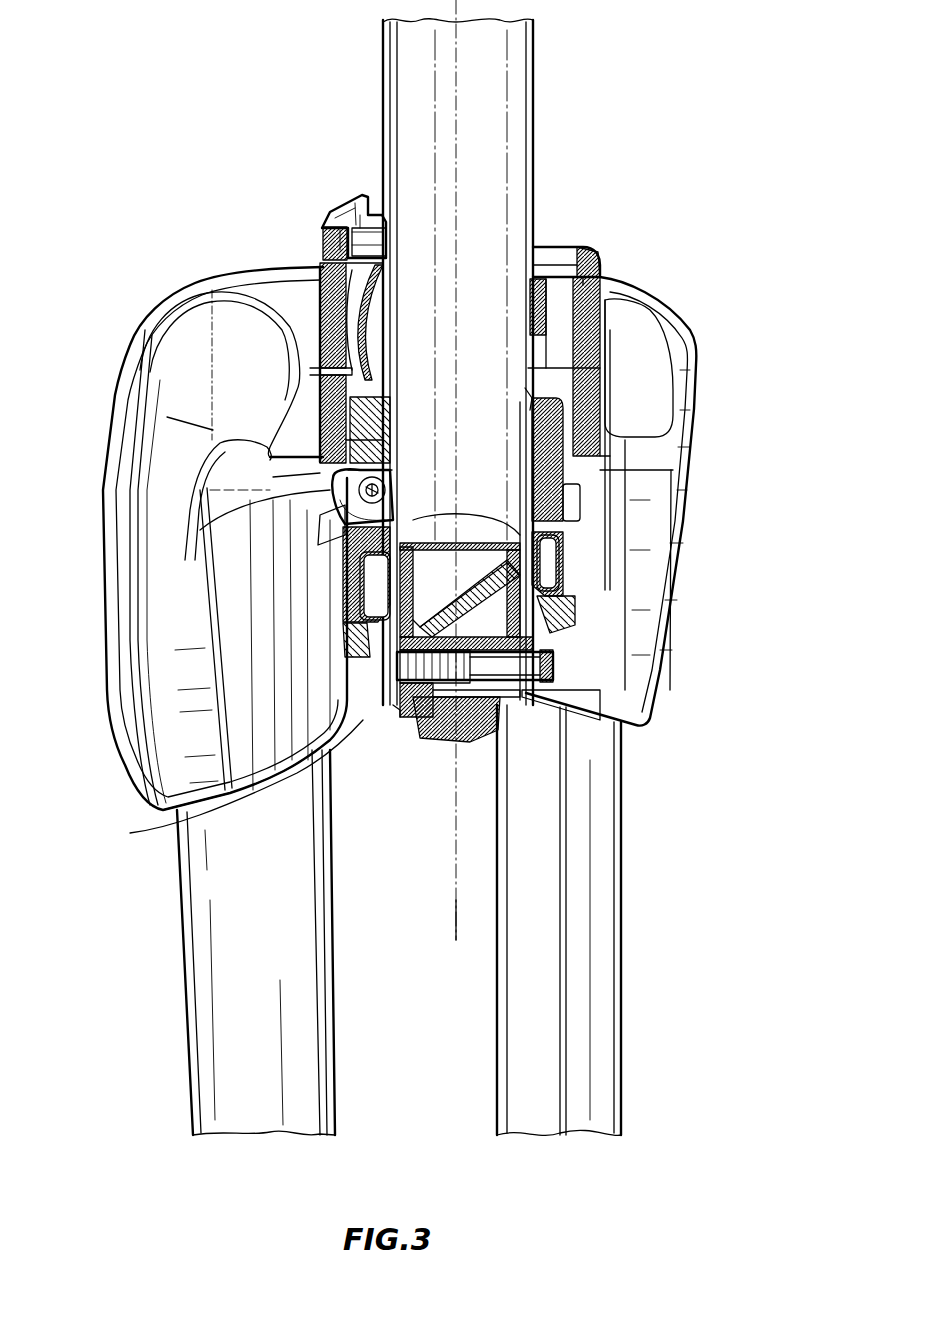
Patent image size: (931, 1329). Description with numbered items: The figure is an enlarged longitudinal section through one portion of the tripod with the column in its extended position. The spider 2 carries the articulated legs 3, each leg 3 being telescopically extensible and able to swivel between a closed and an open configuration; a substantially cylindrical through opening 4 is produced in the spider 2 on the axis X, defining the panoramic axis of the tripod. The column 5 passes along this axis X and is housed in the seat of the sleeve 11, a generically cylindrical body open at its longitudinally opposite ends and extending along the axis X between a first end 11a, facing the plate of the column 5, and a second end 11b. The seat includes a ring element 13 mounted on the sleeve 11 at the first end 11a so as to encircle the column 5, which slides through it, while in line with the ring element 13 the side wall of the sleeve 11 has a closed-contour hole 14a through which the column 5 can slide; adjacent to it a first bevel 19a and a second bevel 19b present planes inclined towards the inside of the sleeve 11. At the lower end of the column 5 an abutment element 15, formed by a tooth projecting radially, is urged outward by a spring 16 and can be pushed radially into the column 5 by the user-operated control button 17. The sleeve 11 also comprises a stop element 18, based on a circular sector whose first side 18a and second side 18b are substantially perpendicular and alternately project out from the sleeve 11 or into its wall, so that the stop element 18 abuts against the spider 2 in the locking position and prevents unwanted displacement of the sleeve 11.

The spider 2 is at (267, 287).
The legs 3 is at (235, 1030).
The through opening 4 is at (570, 300).
The column 5 is at (507, 170).
The sleeve 11 is at (553, 483).
The first end 11a is at (350, 200).
The second end 11b is at (130, 833).
The ring element 13 is at (318, 235).
The hole 14a is at (355, 338).
The abutment element 15 is at (530, 657).
The spring 16 is at (400, 665).
The control button 17 is at (420, 700).
The stop element 18 is at (353, 488).
The first side 18a is at (350, 478).
The second side 18b is at (563, 533).
The first bevel 19a is at (320, 390).
The second bevel 19b is at (540, 382).
The axis X is at (456, 940).